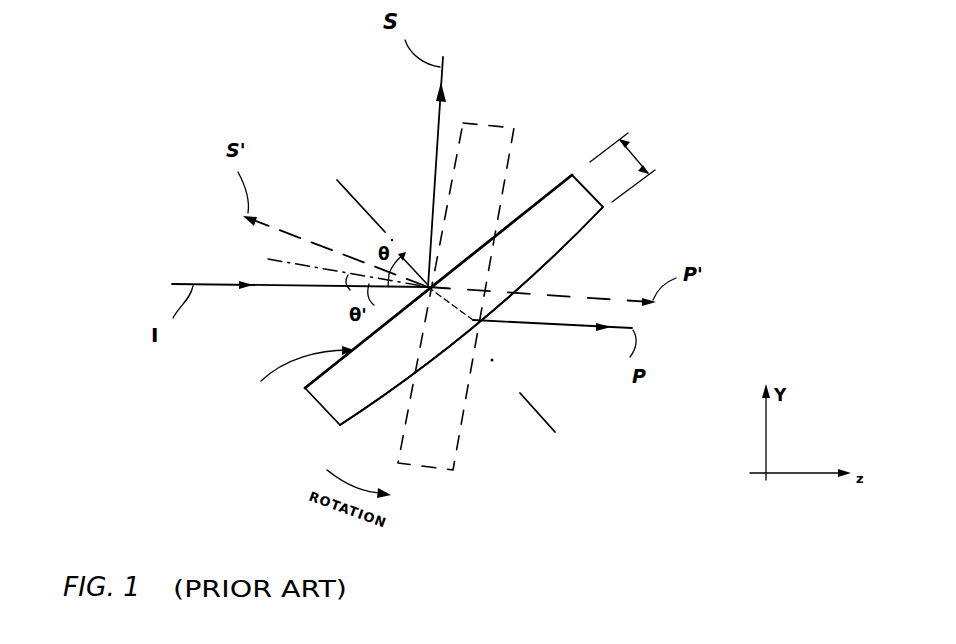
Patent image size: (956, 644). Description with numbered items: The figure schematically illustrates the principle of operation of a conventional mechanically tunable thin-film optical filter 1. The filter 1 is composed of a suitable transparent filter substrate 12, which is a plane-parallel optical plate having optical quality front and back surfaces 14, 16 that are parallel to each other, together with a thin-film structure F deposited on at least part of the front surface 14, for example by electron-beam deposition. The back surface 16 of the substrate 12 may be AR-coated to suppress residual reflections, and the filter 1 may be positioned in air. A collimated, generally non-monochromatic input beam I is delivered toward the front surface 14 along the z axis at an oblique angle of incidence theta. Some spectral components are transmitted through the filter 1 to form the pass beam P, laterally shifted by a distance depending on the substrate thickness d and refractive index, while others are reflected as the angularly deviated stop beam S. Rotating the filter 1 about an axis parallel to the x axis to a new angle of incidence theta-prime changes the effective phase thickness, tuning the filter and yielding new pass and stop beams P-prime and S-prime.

The tunable thin-film optical filter 1 is at (462, 286).
The filter substrate 12 is at (488, 261).
The front surface 14 is at (570, 178).
The back surface 16 is at (579, 228).